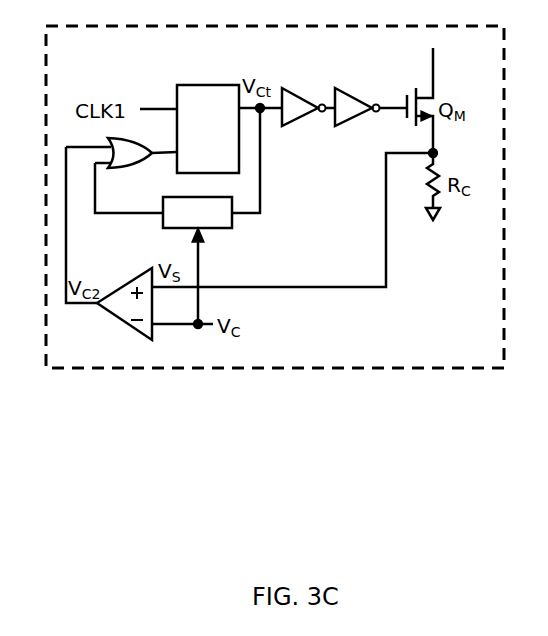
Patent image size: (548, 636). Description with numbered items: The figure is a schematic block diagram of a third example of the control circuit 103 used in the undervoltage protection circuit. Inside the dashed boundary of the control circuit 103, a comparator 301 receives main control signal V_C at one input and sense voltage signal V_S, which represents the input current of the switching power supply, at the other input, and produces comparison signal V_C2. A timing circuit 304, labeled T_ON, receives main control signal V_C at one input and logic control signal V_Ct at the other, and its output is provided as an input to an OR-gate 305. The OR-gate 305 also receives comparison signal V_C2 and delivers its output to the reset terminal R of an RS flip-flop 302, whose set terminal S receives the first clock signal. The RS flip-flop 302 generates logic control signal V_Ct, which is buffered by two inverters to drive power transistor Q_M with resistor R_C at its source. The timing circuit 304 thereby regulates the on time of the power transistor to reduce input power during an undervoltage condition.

The control circuit 103 is at (275, 197).
The RS flip-flop 302 is at (198, 85).
The OR-gate 305 is at (145, 166).
The timing circuit 304 is at (229, 228).
The comparator 301 is at (122, 320).